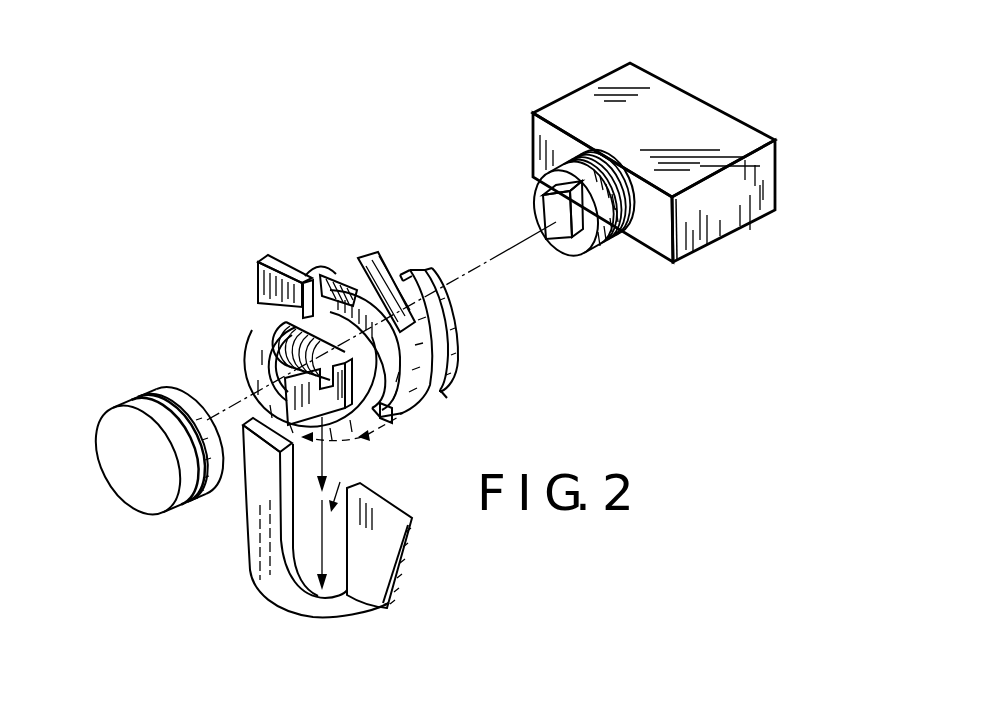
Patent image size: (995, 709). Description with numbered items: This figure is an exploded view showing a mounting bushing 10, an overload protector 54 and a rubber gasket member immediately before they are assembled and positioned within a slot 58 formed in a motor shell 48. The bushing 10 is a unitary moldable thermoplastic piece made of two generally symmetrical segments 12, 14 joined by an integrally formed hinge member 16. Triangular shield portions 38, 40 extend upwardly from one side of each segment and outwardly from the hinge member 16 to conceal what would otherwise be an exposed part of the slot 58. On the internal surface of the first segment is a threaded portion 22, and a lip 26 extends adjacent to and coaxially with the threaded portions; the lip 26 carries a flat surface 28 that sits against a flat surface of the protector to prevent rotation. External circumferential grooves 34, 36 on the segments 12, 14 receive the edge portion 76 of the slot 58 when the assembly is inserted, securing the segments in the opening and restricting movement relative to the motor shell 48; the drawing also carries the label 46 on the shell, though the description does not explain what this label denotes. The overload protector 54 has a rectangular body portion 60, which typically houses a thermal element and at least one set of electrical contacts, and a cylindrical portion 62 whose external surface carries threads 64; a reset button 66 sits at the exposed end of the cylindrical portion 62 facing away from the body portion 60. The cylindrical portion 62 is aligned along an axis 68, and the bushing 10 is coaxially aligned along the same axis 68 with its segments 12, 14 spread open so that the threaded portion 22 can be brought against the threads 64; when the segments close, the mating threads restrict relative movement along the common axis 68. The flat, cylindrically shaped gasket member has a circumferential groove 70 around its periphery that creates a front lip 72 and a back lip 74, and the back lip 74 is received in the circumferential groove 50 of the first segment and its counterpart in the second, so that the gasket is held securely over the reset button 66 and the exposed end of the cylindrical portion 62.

The mounting bushing 10 is at (286, 190).
The segment 12 is at (238, 298).
The segment 14 is at (394, 254).
The hinge member 16 is at (321, 258).
The threaded portion 22 is at (332, 354).
The lip 26 is at (425, 268).
The flat surface 28 is at (440, 274).
The circumferential groove 34 is at (333, 430).
The circumferential groove 36 is at (443, 386).
The triangular shield portion 38 is at (258, 266).
The triangular shield portion 40 is at (349, 262).
The mounting bracket 46 is at (384, 572).
The motor shell 48 is at (383, 520).
The circumferential groove 50 is at (282, 352).
The overload protector 54 is at (672, 68).
The slot 58 is at (340, 482).
The rectangular body portion 60 is at (727, 135).
The cylindrical portion 62 is at (592, 243).
The threads 64 is at (598, 183).
The reset button 66 is at (560, 228).
The axis 68 is at (512, 242).
The circumferential groove 70 is at (152, 396).
The front lip 72 is at (124, 398).
The back lip 74 is at (172, 393).
The edge portion 76 is at (388, 606).